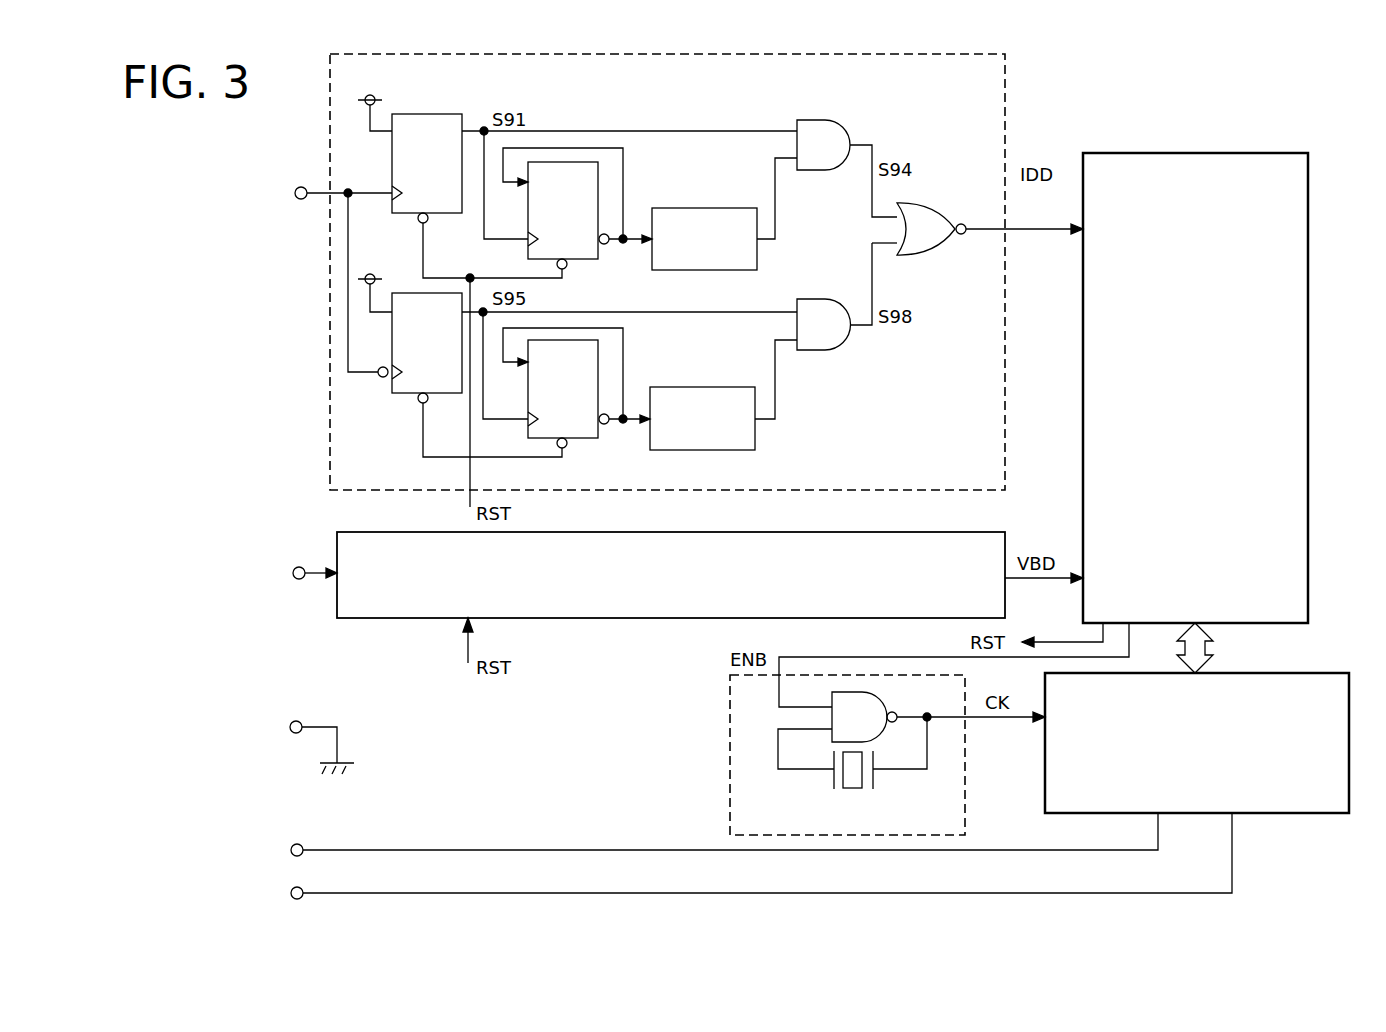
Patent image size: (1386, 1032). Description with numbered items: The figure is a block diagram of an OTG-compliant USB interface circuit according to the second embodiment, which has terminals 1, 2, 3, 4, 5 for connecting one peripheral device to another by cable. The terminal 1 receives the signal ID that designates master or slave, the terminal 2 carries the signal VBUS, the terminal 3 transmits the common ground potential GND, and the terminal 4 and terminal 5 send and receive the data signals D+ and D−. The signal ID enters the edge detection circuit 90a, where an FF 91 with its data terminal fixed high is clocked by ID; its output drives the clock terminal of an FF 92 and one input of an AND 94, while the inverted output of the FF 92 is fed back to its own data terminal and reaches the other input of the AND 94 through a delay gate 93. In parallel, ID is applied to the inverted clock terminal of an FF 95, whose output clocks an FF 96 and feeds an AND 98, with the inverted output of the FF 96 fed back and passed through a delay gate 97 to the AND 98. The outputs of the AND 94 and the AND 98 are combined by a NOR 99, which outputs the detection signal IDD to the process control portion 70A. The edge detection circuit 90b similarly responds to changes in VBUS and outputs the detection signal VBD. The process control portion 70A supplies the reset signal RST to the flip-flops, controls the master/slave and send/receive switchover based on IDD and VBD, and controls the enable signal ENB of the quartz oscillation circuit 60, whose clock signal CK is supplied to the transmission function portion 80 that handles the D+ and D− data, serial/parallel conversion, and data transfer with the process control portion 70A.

The terminal 1 is at (301, 186).
The terminal 2 is at (299, 566).
The terminal 3 is at (302, 721).
The terminal 4 is at (303, 845).
The terminal 5 is at (304, 888).
The quartz oscillation circuit 60 is at (730, 779).
The process control portion 70A is at (1250, 153).
The transmission function portion 80 is at (1293, 815).
The edge detection circuit 90a is at (1010, 96).
The edge detection circuit 90b is at (945, 532).
The FF 91 is at (421, 114).
The FF 92 is at (568, 270).
The delay gate 93 is at (731, 208).
The AND 94 is at (812, 120).
The FF 95 is at (400, 394).
The FF 96 is at (568, 449).
The delay gate 97 is at (733, 387).
The AND 98 is at (815, 351).
The NOR 99 is at (943, 205).